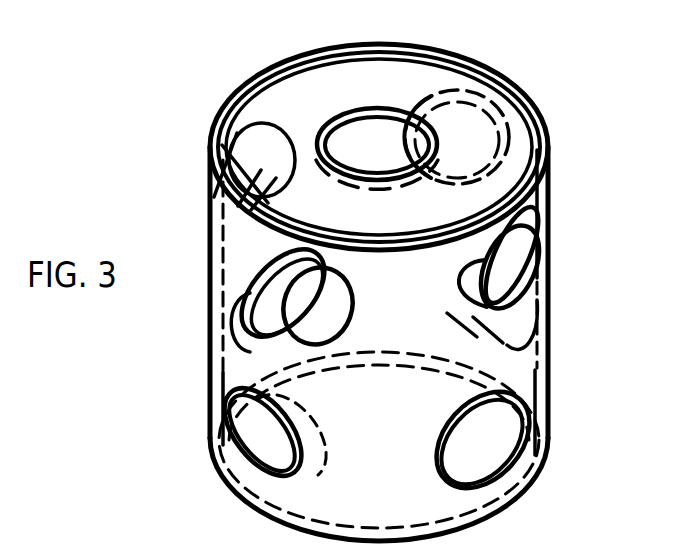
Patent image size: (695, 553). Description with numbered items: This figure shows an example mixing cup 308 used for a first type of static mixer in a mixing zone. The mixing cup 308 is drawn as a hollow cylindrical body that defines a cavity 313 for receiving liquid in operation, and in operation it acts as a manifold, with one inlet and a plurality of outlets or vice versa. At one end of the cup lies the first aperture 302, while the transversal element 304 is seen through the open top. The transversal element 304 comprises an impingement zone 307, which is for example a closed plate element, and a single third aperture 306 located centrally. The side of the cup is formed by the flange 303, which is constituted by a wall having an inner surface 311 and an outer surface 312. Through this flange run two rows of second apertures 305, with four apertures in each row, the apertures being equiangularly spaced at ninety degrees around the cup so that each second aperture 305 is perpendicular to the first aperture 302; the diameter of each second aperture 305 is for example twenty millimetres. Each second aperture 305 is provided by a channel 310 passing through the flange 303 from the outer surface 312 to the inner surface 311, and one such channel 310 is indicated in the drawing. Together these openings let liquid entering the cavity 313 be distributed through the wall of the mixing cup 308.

The first aperture 302 is at (443, 512).
The flange 303 is at (550, 292).
The transversal element 304 is at (507, 124).
The second apertures 305 is at (500, 140).
The third aperture 306 is at (368, 110).
The impingement zone 307 is at (307, 103).
The mixing cup 308 is at (550, 212).
The channel 310 is at (480, 450).
The inner surface 311 is at (530, 390).
The outer surface 312 is at (537, 330).
The cavity 313 is at (393, 280).